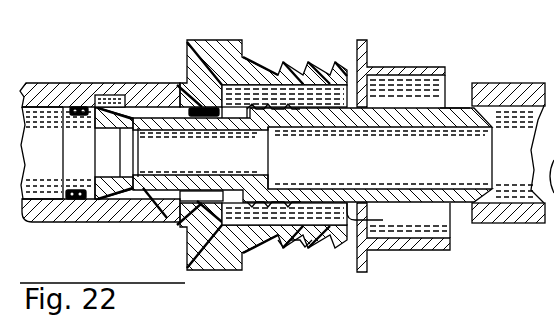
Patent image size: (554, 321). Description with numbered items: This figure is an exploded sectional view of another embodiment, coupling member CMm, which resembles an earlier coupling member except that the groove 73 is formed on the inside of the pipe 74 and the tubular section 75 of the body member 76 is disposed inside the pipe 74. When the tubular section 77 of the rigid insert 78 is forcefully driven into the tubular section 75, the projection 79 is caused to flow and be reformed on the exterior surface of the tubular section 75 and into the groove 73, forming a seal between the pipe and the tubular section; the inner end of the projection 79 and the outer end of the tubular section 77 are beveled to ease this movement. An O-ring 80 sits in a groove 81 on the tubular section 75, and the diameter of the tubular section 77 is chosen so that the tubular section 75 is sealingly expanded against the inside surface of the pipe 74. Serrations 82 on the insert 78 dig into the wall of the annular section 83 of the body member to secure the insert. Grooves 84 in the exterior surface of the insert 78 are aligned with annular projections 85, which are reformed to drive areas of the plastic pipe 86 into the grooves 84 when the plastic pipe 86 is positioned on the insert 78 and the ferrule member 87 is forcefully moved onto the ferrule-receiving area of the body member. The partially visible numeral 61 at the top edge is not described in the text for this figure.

The pipe 74 is at (47, 90).
The body member 76 is at (153, 204).
The groove 73 is at (112, 97).
The O-ring 80 is at (78, 106).
The groove 81 is at (93, 207).
The projection 79 is at (105, 123).
The tubular section 75 is at (125, 198).
The tubular section 77 is at (197, 122).
The rigid insert 78 is at (458, 98).
The annular section 83 is at (201, 106).
The coupling member CMm is at (262, 48).
The serrations 82 is at (255, 108).
The annular projections 85 is at (262, 245).
The ferrule member 87 is at (390, 66).
The grooves 84 is at (383, 221).
The plastic pipe 86 is at (500, 100).
The housing 61 is at (392, 5).